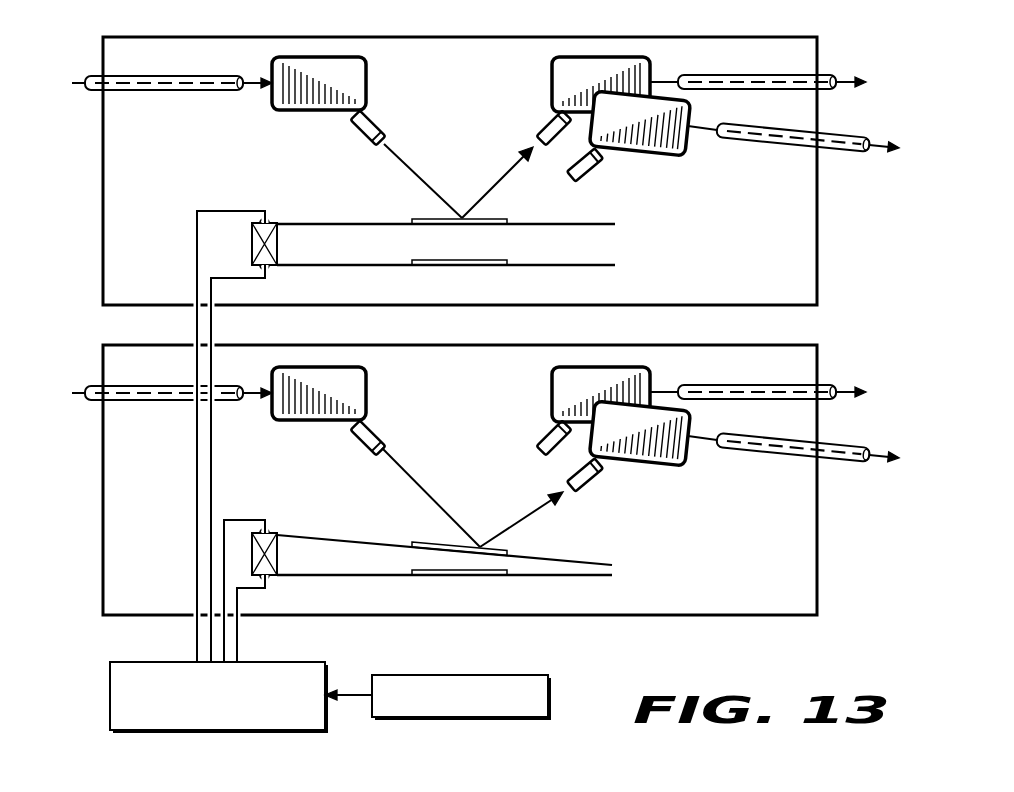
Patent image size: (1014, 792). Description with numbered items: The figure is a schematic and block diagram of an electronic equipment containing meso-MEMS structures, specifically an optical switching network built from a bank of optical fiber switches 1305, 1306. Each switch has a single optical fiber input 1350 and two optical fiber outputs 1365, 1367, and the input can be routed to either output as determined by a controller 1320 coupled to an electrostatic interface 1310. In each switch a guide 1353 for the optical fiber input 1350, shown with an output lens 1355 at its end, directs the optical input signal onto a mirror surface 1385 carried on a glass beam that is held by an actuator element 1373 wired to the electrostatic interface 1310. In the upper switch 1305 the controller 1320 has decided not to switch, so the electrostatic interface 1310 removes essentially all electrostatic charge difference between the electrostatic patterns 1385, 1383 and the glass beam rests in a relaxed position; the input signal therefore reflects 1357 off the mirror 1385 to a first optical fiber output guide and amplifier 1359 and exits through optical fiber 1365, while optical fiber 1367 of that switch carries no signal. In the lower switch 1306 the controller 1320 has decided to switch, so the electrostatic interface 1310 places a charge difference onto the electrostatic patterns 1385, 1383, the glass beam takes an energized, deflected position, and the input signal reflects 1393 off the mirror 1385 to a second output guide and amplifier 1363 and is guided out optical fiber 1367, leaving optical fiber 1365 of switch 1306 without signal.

The optical fiber switch 1305 is at (780, 278).
The optical fiber switch 1306 is at (780, 588).
The electrostatic interface 1310 is at (110, 693).
The controller 1320 is at (462, 675).
The optical fiber input 1350 is at (164, 92).
The guide 1353 is at (368, 80).
The output lens 1355 is at (360, 134).
The reflection of the optical input signal 1357 is at (493, 186).
The first optical fiber output guide and amplifier 1359 is at (552, 82).
The second detector 1363 is at (634, 153).
The optical fiber output 1365 is at (757, 76).
The optical fiber output 1367 is at (769, 147).
The electrostatic actuator 1373 is at (278, 244).
The electrostatic pattern 1383 is at (507, 261).
The mirror surface 1385 is at (507, 220).
The reflection of the optical input signal 1393 is at (514, 520).